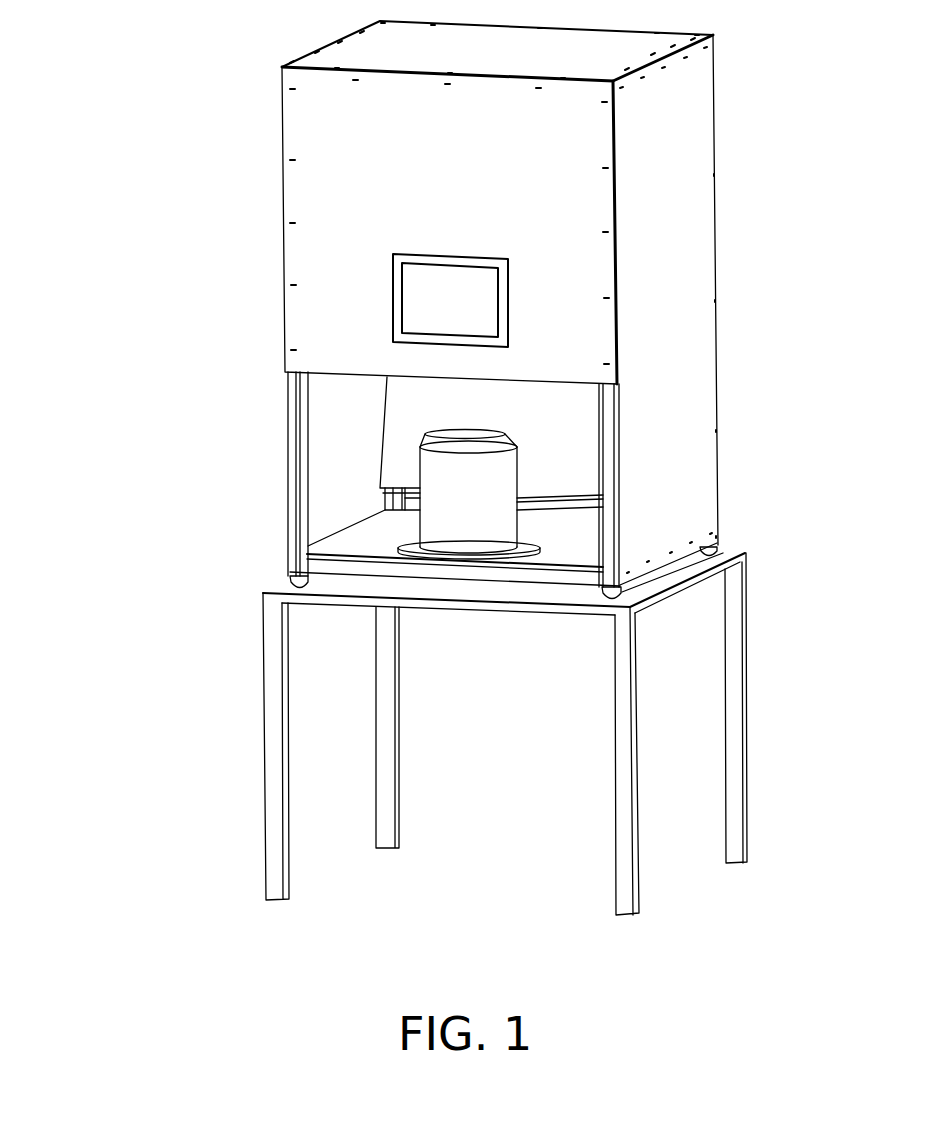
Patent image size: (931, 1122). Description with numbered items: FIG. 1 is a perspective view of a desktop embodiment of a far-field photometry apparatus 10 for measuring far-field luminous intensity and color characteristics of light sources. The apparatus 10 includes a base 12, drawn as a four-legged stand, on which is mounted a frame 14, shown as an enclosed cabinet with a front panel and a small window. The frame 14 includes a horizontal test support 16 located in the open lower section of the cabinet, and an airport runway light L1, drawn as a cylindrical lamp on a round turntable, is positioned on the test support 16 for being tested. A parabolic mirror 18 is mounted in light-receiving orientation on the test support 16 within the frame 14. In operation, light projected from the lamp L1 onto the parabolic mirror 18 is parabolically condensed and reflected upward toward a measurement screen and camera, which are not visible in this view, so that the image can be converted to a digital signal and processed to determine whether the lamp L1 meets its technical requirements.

The FFP apparatus 10 is at (152, 186).
The base 12 is at (263, 593).
The frame 14 is at (296, 250).
The horizontal test support 16 is at (348, 542).
The parabolic mirror 18 is at (558, 408).
The airport runway light L1 is at (502, 475).